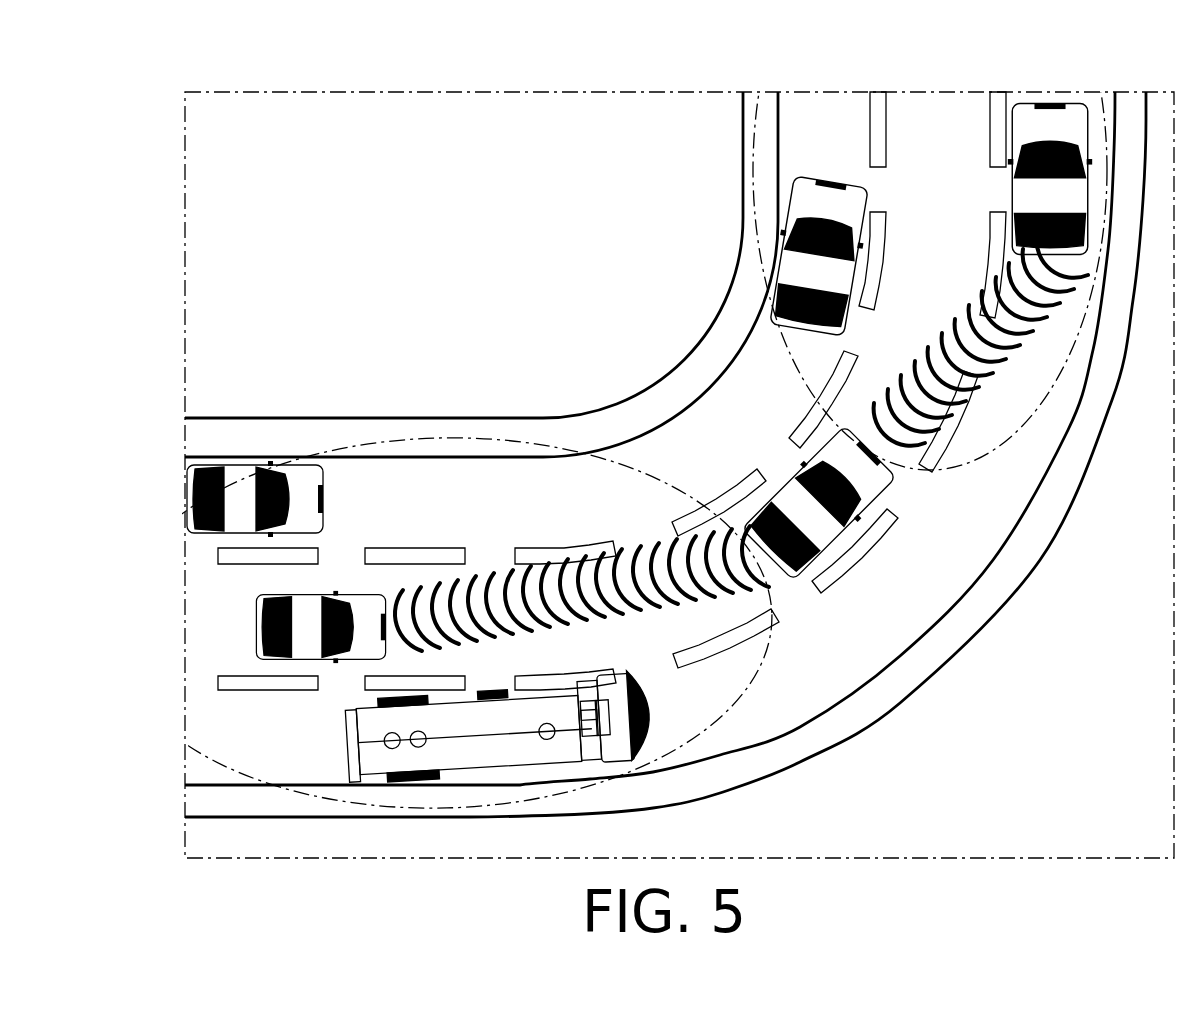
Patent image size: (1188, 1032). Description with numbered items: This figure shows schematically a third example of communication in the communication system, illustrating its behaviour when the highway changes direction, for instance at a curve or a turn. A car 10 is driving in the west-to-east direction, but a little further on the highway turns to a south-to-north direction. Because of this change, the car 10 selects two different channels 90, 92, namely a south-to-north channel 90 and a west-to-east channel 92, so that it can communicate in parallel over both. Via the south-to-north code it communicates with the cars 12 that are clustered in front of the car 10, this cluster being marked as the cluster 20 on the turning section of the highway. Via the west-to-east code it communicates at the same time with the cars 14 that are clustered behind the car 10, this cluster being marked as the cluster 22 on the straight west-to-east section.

The car 10 is at (860, 512).
The cars 12 is at (1045, 100).
The cars 14 is at (258, 627).
The cluster 20 is at (1031, 415).
The cluster 22 is at (440, 437).
The south-to-north channel 90 is at (972, 296).
The west-to-east channel 92 is at (496, 575).